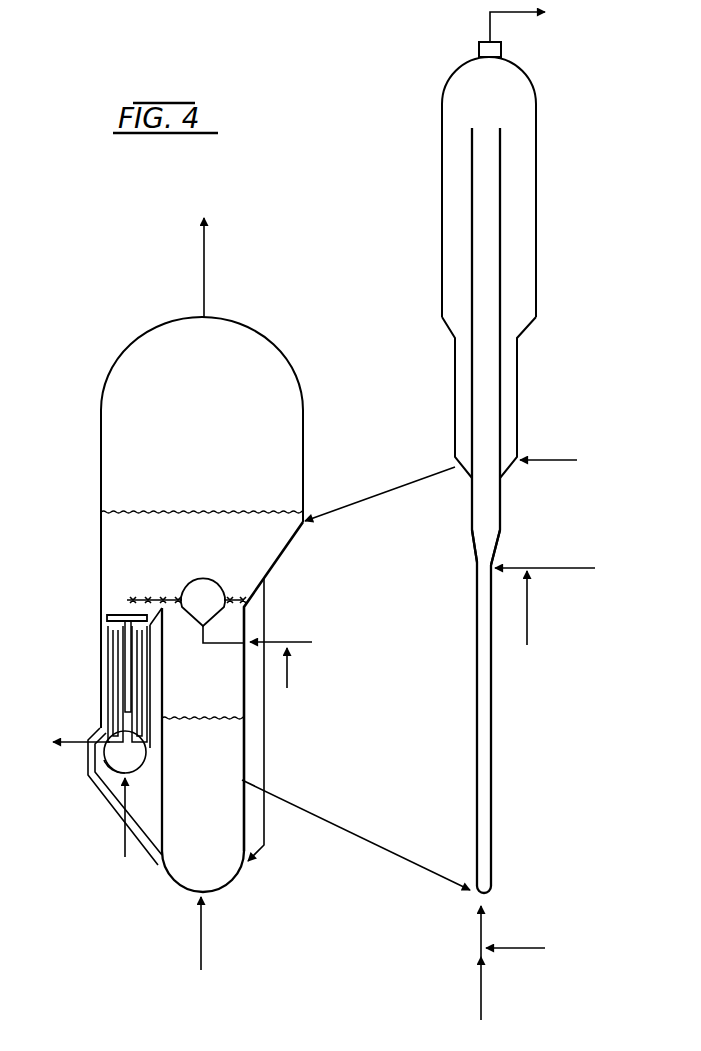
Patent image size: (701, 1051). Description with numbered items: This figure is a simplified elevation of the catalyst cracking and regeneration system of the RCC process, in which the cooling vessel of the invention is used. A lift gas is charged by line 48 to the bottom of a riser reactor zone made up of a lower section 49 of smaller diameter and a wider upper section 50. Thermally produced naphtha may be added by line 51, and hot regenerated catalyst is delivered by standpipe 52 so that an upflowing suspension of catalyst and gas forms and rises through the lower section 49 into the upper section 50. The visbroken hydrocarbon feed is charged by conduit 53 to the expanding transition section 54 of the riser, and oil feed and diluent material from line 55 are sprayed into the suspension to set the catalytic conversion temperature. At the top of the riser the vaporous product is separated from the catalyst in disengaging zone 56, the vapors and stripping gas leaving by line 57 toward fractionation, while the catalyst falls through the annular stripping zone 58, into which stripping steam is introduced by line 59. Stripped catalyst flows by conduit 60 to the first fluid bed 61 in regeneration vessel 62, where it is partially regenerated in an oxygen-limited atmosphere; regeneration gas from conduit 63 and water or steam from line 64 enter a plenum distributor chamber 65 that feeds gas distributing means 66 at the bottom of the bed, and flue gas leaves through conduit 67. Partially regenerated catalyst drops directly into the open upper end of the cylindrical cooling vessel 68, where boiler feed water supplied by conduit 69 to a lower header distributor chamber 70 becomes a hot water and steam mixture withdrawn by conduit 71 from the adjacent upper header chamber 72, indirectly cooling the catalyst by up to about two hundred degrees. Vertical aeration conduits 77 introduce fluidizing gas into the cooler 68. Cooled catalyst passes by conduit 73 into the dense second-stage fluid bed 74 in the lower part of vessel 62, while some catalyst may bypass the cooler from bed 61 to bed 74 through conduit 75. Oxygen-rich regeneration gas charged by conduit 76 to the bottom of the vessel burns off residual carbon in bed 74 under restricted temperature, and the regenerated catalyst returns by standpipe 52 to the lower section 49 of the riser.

The lift gas line 48 is at (481, 1005).
The lower section of riser reactor zone 49 is at (491, 752).
The upper section of riser reactor zone 50 is at (500, 510).
The naphtha line 51 is at (518, 949).
The standpipe 52 is at (405, 858).
The hydrocarbon feed conduit 53 is at (562, 569).
The expanding transition section 54 is at (472, 548).
The oil feed and diluent line 55 is at (527, 632).
The disengaging zone 56 is at (536, 218).
The vapor product line 57 is at (522, 13).
The annular stripping zone 58 is at (517, 393).
The stripping steam line 59 is at (565, 461).
The stripped catalyst conduit 60 is at (395, 489).
The first fluid bed 61 is at (206, 556).
The regeneration vessel 62 is at (303, 430).
The regeneration gas conduit 63 is at (280, 641).
The water or steam line 64 is at (288, 670).
The plenum distributor chamber 65 is at (208, 594).
The gas distributing means 66 is at (152, 600).
The flue gas conduit 67 is at (204, 268).
The cooling vessel 68 is at (100, 680).
The boiler feed water conduit 69 is at (125, 838).
The lower header distributor chamber 70 is at (130, 764).
The steam recovery conduit 71 is at (72, 748).
The upper header chamber 72 is at (104, 760).
The cooled catalyst conduit 73 is at (103, 803).
The dense fluid bed 74 is at (215, 823).
The bypass conduit 75 is at (264, 735).
The oxygen-rich regeneration gas conduit 76 is at (201, 948).
The vertical aeration conduits 77 is at (107, 618).